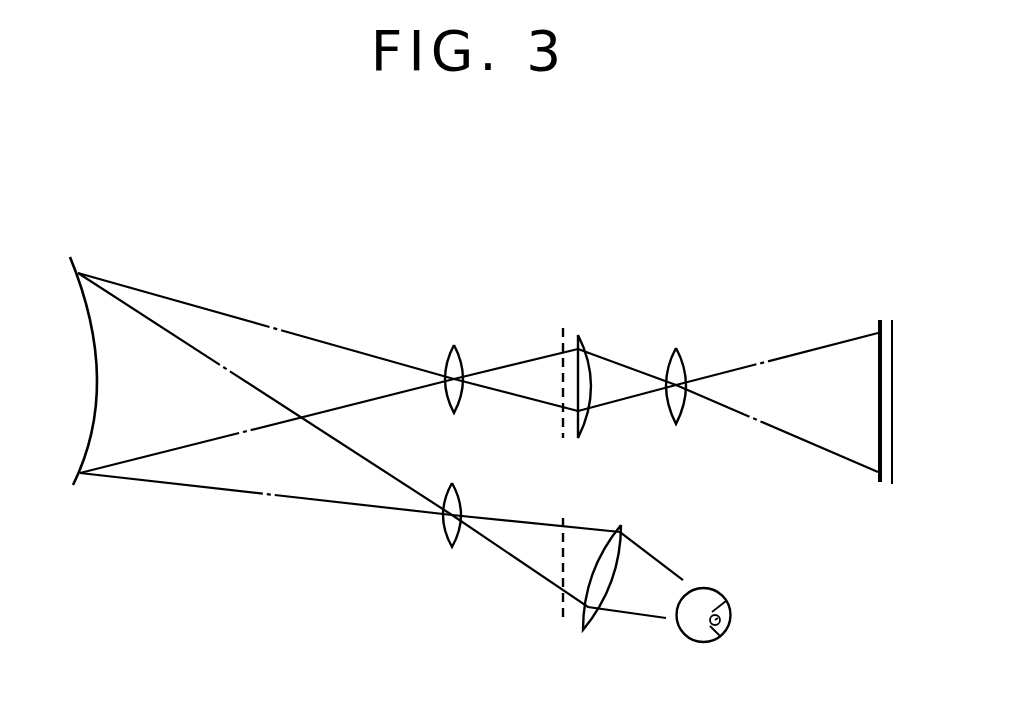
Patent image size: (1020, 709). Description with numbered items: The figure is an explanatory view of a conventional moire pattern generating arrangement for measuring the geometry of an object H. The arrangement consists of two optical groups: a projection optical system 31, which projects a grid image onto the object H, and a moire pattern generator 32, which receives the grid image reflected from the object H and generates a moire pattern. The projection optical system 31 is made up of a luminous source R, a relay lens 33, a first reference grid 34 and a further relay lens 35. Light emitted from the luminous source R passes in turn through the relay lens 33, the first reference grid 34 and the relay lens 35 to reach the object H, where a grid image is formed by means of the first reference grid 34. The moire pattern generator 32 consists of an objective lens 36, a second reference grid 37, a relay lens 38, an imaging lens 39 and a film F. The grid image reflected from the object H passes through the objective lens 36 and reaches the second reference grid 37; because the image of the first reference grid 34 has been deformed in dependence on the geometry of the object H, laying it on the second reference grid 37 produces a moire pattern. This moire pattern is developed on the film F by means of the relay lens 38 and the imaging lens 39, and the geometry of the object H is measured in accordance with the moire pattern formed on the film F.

The projection optical system 31 is at (477, 597).
The moire pattern generator 32 is at (562, 295).
The relay lens 33 is at (593, 620).
The first reference grid 34 is at (562, 610).
The relay lens 35 is at (445, 537).
The objective lens 36 is at (463, 392).
The second reference grid 37 is at (560, 333).
The relay lens 38 is at (582, 335).
The imaging lens 39 is at (680, 352).
The object H is at (90, 437).
The film F is at (878, 358).
The luminous source R is at (730, 601).